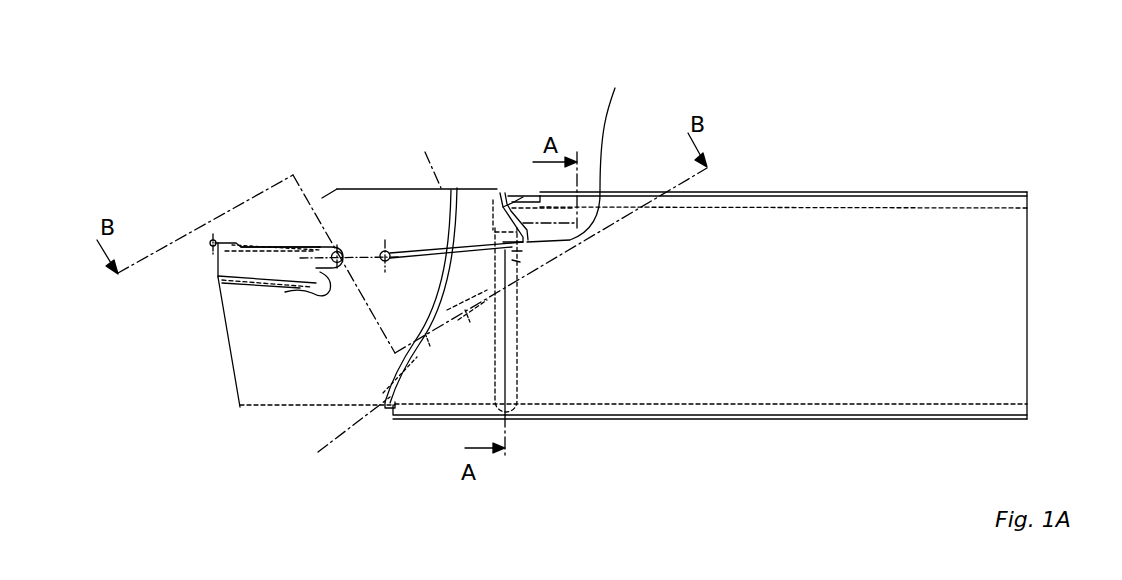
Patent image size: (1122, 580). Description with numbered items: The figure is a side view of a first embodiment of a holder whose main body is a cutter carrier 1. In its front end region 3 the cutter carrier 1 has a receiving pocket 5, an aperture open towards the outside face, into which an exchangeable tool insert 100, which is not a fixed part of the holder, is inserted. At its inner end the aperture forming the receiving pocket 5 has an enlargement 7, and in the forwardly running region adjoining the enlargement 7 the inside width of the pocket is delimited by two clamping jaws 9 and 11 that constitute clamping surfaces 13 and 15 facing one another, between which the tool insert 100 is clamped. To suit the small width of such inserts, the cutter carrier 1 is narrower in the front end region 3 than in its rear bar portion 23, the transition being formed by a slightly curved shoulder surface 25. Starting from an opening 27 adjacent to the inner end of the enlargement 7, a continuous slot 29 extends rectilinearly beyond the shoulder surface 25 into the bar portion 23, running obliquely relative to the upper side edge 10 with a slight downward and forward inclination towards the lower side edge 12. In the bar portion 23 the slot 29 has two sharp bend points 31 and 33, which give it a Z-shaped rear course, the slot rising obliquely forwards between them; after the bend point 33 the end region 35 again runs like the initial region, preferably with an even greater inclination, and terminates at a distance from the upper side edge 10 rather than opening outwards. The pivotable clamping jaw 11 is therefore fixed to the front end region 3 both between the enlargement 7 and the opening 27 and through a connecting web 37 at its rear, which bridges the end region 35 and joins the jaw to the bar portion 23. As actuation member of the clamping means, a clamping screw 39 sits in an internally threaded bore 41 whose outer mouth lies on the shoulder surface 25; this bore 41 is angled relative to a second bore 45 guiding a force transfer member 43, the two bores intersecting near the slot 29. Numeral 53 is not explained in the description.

The cutter carrier 1 is at (765, 243).
The front end region 3 is at (280, 388).
The receiving pocket 5 is at (199, 253).
The enlargement 7 is at (285, 292).
The clamping jaw 9 is at (235, 312).
The upper side edge 10 is at (893, 192).
The pivotable clamping jaw 11 is at (297, 225).
The lower side edge 12 is at (788, 419).
The clamping surface 13 is at (217, 278).
The clamping surface 15 is at (262, 243).
The bar portion 23 is at (637, 385).
The shoulder surface 25 is at (408, 370).
The opening 27 is at (385, 250).
The slot 29 is at (497, 243).
The sharp bend point 31 is at (578, 148).
The sharp bend point 33 is at (503, 193).
The end region 35 is at (512, 193).
The connecting web 37 is at (500, 193).
The clamping screw 39 is at (487, 313).
The bore 41 is at (445, 345).
The force transfer member 43 is at (513, 260).
The second bore 45 is at (514, 252).
The curved guide strip 53 is at (466, 190).
The tool insert 100 is at (215, 262).